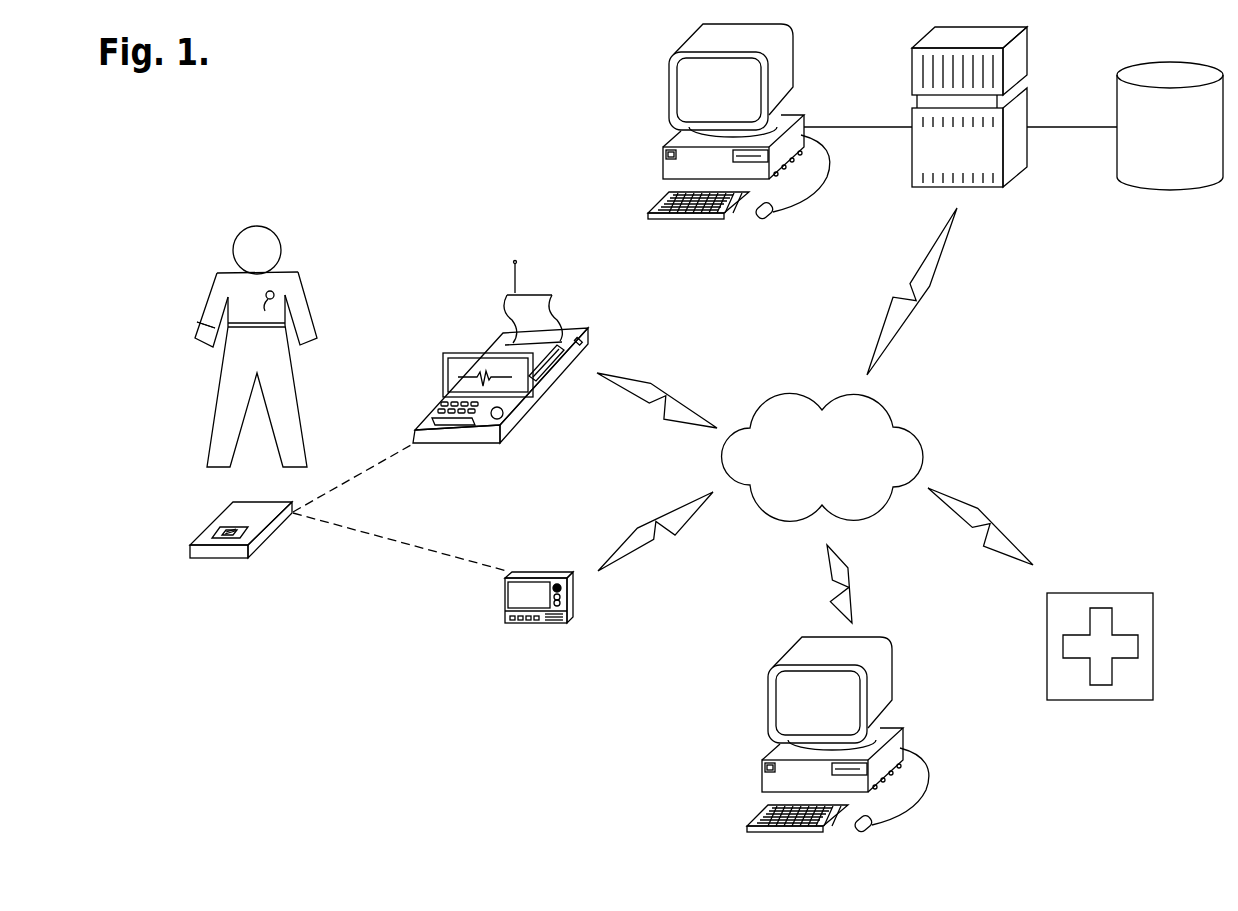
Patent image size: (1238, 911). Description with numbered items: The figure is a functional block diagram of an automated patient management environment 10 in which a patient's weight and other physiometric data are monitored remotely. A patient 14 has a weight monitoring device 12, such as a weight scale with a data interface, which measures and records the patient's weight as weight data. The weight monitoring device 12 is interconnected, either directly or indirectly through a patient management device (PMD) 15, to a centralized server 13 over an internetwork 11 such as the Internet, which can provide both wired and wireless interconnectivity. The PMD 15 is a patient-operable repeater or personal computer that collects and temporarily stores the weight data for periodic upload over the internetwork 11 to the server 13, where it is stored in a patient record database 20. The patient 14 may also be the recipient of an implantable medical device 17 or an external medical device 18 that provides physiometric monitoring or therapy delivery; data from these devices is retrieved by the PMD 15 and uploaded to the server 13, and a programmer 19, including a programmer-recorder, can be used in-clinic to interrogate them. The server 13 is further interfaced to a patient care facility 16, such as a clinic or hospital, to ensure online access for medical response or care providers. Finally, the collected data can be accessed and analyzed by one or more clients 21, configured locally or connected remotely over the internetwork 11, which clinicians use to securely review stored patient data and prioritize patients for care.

The automated patient management environment 10 is at (221, 110).
The internetwork 11 is at (918, 435).
The weight monitoring device 12 is at (189, 554).
The centralized server 13 is at (1027, 50).
The patient 14 is at (222, 395).
The patient management device 15 is at (538, 625).
The patient care facility 16 is at (1155, 607).
The implantable medical device 17 is at (275, 292).
The external medical device 18 is at (217, 329).
The programmer 19 is at (590, 329).
The patient record database 20 is at (1172, 184).
The clients 21 is at (669, 92).